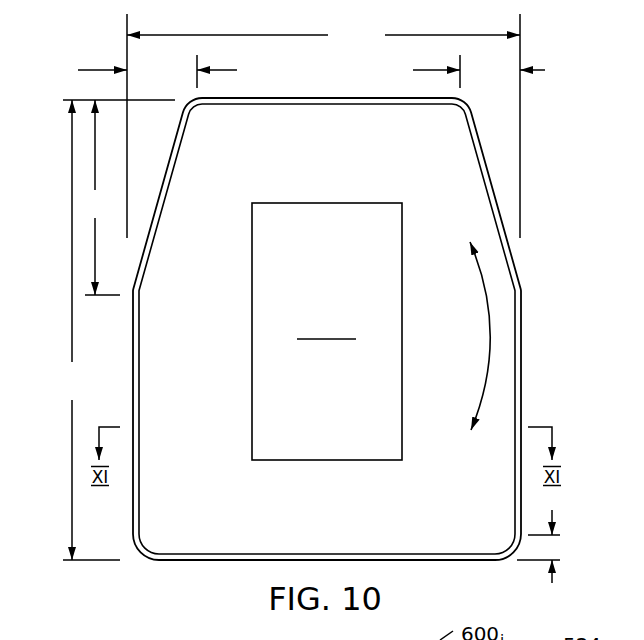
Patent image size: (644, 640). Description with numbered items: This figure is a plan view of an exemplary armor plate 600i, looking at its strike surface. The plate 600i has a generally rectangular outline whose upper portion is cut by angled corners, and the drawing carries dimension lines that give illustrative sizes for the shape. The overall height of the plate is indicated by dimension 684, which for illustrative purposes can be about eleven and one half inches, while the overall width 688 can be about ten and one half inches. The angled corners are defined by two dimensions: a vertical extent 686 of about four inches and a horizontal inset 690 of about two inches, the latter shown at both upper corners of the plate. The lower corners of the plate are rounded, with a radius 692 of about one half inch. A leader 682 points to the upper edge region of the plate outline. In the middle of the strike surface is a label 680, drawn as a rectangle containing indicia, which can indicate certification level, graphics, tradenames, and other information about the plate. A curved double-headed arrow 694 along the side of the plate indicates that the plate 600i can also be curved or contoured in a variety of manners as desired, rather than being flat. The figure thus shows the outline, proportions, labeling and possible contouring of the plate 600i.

The plate 600i is at (527, 335).
The label 680 is at (278, 260).
The top edge of armor plate 682 is at (338, 98).
The height of plate 684 is at (85, 330).
The angled corner dimension 686 is at (119, 197).
The width of plate 688 is at (323, 126).
The angled corner dimension 690 is at (311, 71).
The radius 692 is at (540, 546).
The curvature or contour 694 is at (463, 336).